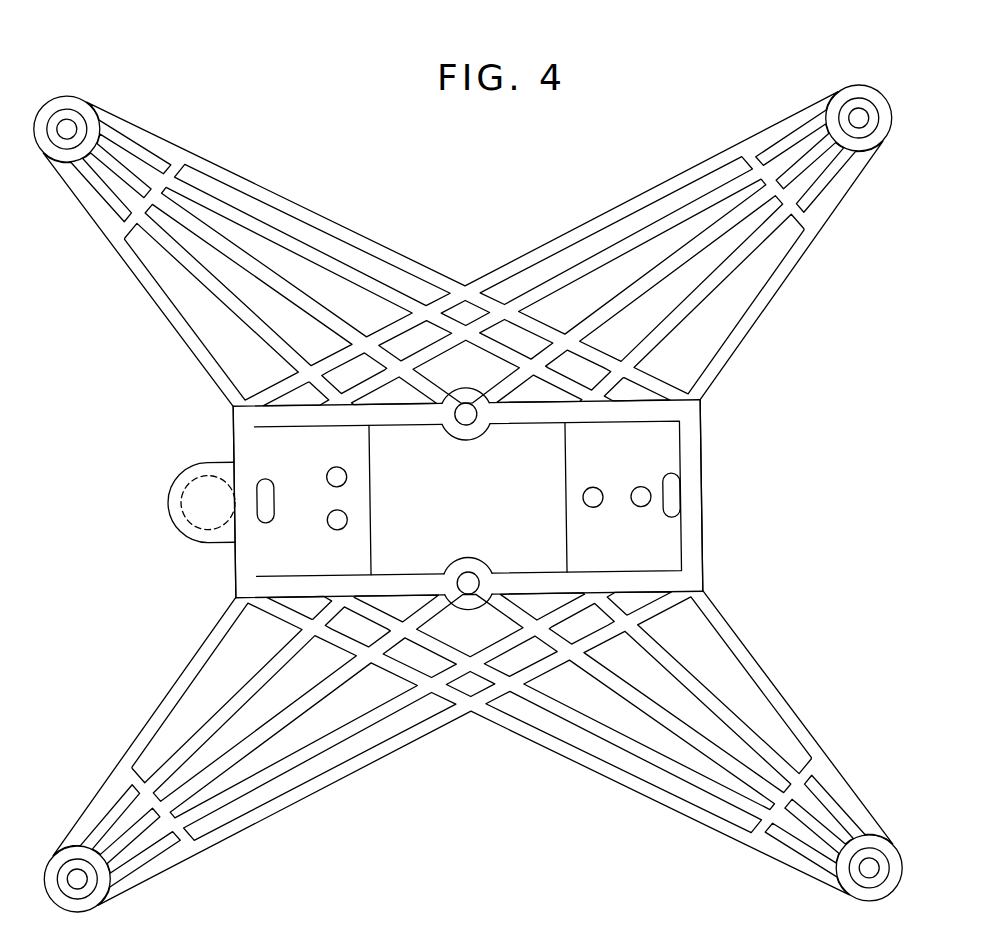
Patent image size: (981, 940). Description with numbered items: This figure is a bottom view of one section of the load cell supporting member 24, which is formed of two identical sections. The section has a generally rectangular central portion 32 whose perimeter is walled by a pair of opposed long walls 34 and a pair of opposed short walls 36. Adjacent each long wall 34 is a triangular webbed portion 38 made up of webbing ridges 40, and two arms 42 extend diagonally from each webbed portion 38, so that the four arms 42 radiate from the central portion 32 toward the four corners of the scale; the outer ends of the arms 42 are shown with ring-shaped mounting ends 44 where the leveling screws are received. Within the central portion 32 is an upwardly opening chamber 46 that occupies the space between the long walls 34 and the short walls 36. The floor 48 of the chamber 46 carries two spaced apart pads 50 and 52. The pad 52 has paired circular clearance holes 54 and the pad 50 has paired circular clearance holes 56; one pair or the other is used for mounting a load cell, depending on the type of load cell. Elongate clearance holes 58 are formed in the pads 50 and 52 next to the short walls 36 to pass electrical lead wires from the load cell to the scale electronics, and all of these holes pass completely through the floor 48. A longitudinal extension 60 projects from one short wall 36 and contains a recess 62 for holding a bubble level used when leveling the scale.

The load cell supporting member 24 is at (356, 214).
The central portion 32 is at (716, 518).
The long walls 34 is at (657, 567).
The short walls 36 is at (695, 563).
The triangular webbed portion 38 is at (468, 315).
The webbing ridges 40 is at (438, 323).
The arms 42 is at (200, 187).
The mounting rings 44 is at (70, 122).
The chamber 46 is at (392, 468).
The floor 48 is at (484, 510).
The pad 50 is at (640, 508).
The pad 52 is at (311, 561).
The circular clearance holes 54 is at (349, 519).
The circular clearance holes 56 is at (594, 487).
The elongate clearance holes 58 is at (263, 488).
The longitudinal extension 60 is at (195, 541).
The recess 62 is at (186, 482).